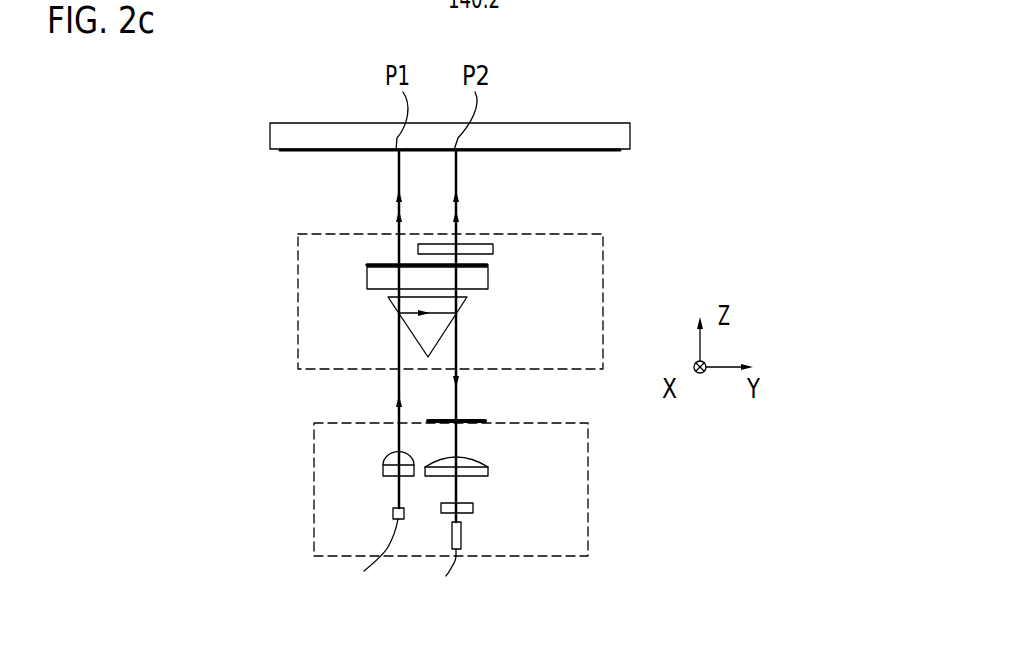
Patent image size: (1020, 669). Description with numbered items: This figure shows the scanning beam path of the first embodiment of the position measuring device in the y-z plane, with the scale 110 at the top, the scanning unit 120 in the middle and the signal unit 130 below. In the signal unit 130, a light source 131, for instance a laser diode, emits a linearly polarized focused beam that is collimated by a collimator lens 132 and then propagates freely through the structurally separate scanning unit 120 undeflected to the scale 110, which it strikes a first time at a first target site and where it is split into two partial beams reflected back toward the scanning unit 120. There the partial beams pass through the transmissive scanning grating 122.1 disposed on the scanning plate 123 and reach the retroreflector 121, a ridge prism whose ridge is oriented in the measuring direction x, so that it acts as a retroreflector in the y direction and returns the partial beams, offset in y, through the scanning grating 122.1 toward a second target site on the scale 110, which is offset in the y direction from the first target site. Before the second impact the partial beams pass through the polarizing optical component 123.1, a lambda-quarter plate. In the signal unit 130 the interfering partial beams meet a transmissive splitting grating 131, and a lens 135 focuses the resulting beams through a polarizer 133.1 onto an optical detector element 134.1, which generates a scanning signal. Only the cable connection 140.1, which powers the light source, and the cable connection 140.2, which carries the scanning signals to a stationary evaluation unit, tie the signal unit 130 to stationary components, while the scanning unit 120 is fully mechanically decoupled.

The scale 110 is at (650, 143).
The scanning unit 120 is at (626, 266).
The retroreflector 121 is at (388, 297).
The transmissive scanning grating 122.1 is at (385, 265).
The scanning plate 123 is at (484, 278).
The polarizing optical component 123.1 is at (484, 248).
The signal unit 130 is at (614, 495).
The light source / transmissive splitting grating 131 is at (480, 418).
The collimator lens 132 is at (393, 468).
The polarizer 133.1 is at (465, 508).
The optical detector element 134.1 is at (461, 532).
The lens 135 is at (473, 468).
The cable connection 140.1 is at (389, 547).
The cable connection 140.2 is at (455, 560).